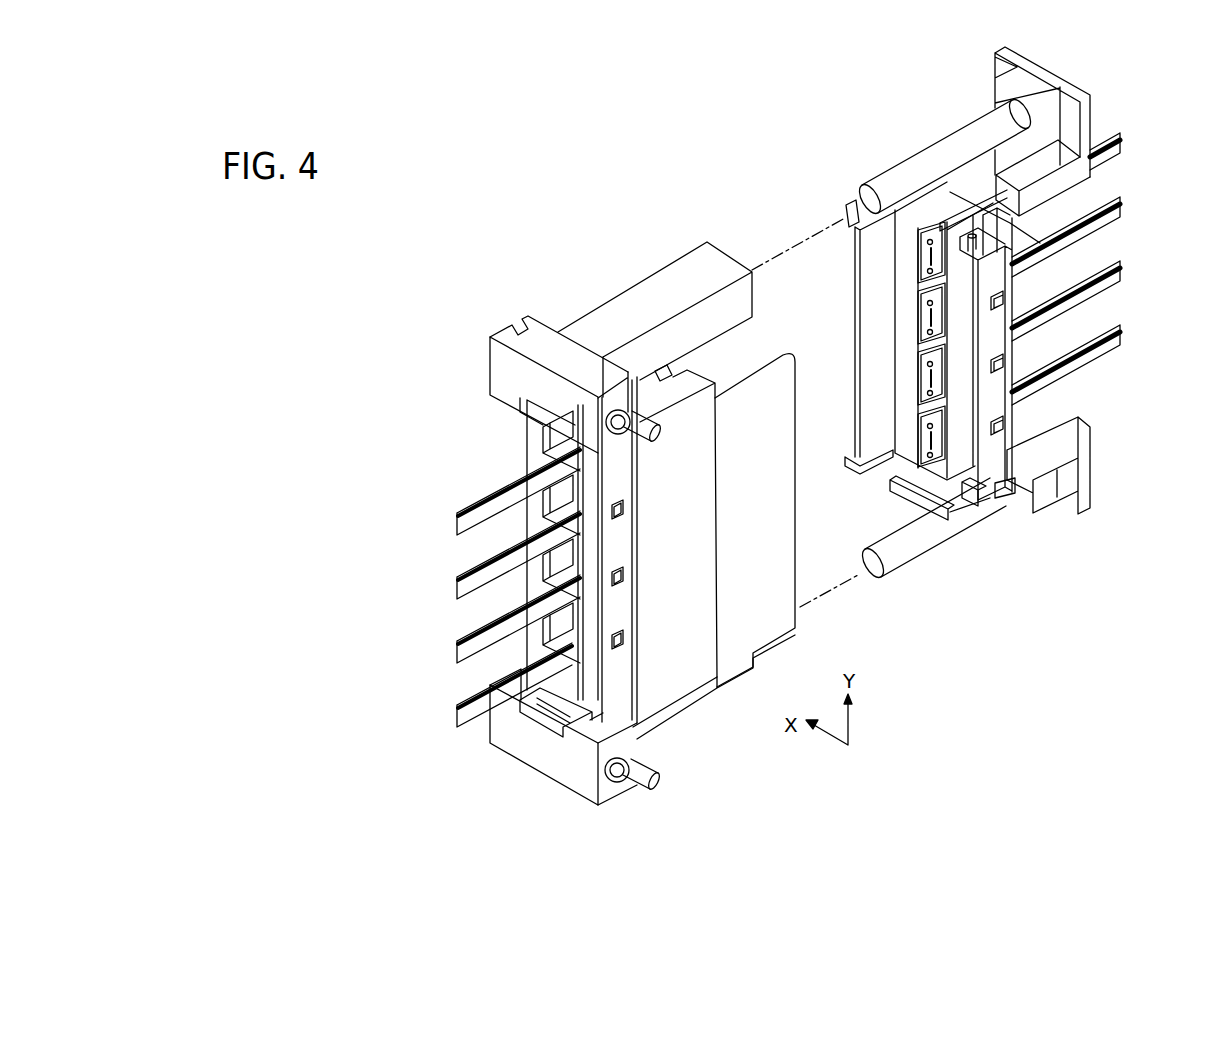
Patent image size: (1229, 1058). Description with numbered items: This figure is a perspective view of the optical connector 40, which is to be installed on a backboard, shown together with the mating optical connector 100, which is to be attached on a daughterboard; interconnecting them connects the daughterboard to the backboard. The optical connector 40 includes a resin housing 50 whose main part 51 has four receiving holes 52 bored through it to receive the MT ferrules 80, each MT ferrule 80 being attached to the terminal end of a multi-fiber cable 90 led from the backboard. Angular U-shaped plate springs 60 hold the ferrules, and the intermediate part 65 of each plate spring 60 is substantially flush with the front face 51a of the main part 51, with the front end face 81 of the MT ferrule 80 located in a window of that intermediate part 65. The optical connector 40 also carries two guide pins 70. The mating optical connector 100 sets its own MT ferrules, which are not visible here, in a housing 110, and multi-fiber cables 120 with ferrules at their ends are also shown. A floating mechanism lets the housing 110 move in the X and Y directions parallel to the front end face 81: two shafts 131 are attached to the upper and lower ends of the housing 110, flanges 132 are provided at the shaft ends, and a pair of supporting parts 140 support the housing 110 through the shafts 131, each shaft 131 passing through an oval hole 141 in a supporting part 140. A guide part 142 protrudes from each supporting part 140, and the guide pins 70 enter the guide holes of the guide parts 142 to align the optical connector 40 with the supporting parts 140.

The mating optical connector 100 is at (491, 297).
The housing 110 is at (530, 466).
The multi-fiber cables 120 is at (470, 710).
The shafts 131 is at (632, 440).
The flanges 132 is at (607, 421).
The supporting parts 140 is at (546, 336).
The hole 141 is at (610, 395).
The guide part 142 is at (682, 272).
The optical connector 40 is at (1097, 97).
The housing 50 is at (1065, 354).
The main part 51 is at (1006, 457).
The front face 51a is at (985, 497).
The receiving holes 52 is at (1000, 426).
The plate spring 60 is at (910, 394).
The intermediate part 65 is at (897, 453).
The guide pins 70 is at (918, 165).
The MT ferrules 80 is at (933, 505).
The front end face 81 is at (925, 437).
The multi-fiber cable 90 is at (1116, 343).